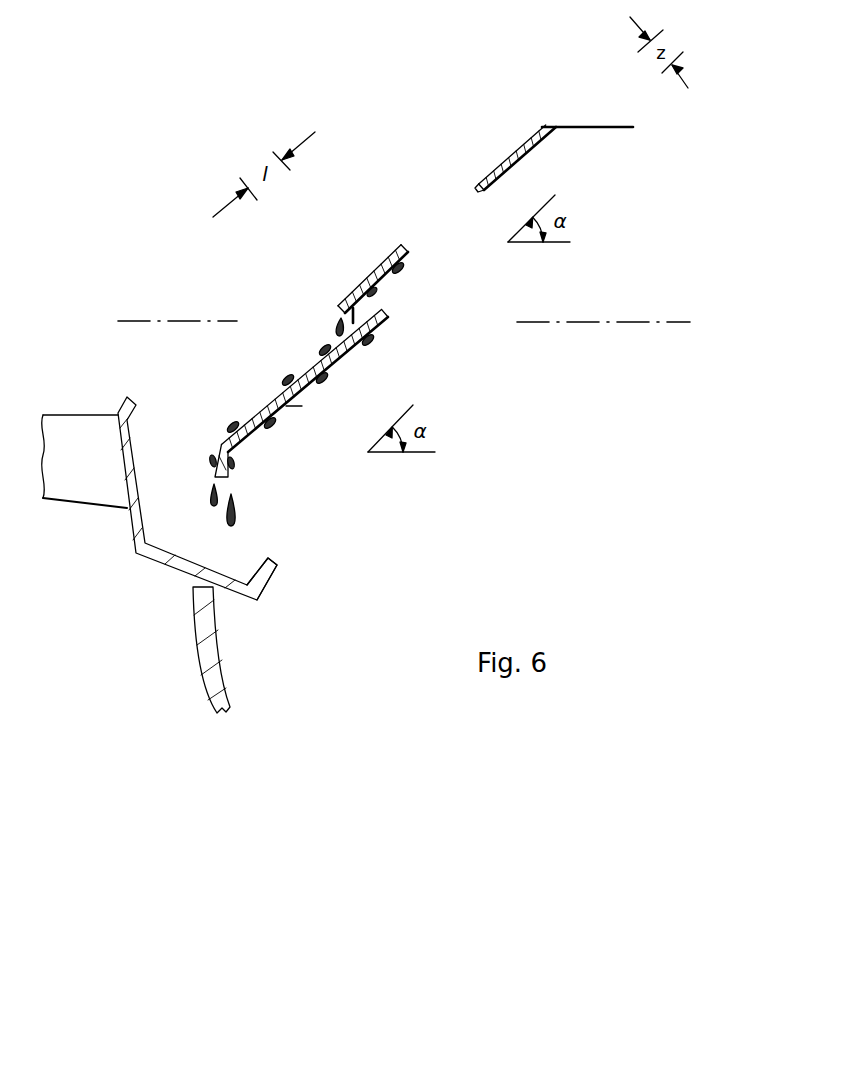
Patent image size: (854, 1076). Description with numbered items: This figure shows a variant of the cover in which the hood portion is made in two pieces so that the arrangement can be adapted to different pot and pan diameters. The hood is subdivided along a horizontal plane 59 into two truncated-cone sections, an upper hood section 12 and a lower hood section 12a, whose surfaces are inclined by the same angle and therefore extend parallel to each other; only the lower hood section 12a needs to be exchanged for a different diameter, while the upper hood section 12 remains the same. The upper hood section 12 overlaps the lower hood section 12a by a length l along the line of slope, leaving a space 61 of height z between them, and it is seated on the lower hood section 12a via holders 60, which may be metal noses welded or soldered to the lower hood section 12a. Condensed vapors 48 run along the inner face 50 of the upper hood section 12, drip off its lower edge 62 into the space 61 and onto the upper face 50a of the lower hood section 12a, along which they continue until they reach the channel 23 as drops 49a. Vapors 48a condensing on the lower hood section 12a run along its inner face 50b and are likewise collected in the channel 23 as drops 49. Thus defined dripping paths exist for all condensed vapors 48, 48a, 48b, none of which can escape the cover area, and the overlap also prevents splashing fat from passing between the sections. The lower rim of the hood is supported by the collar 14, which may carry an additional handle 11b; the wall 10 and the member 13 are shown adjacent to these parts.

The curved wall section 10 is at (197, 643).
The handle 11b is at (80, 427).
The upper hood section 12 is at (505, 150).
The lower hood section 12a is at (253, 369).
The support wall 13 is at (597, 127).
The collar 14 is at (124, 546).
The annular channel 23 is at (222, 560).
The condensed vapors 48 is at (407, 268).
The condensed vapors 48a is at (370, 342).
The condensed vapors 48b is at (280, 377).
The drops 49 is at (237, 515).
The drops 49a is at (207, 500).
The inner face 50 is at (494, 186).
The upper face 50a is at (245, 428).
The inner face 50b is at (292, 410).
The horizontal plane 59 is at (625, 322).
The holder 60 is at (325, 338).
The space 61 is at (365, 307).
The lower edge 62 is at (352, 310).